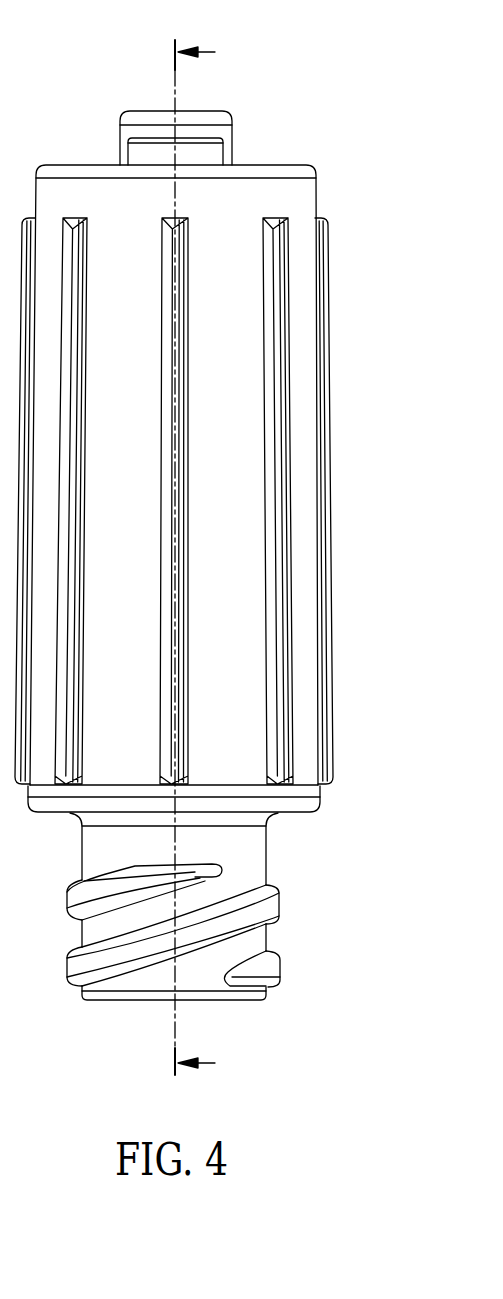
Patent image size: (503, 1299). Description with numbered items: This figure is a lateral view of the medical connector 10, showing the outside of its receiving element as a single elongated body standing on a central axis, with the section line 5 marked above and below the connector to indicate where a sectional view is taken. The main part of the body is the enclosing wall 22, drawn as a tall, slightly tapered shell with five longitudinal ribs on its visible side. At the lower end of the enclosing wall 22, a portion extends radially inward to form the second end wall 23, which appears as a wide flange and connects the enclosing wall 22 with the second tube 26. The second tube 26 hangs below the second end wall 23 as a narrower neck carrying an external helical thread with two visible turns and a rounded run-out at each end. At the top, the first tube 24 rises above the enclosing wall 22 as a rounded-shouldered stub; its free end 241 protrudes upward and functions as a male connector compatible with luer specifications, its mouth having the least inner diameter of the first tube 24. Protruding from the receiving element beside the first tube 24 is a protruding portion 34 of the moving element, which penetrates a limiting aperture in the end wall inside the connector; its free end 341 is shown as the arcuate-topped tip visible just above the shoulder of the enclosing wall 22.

The medical connector 10 is at (385, 137).
The section line 5- 5 is at (195, 557).
The enclosing wall 22 is at (302, 432).
The second end wall 23 is at (293, 805).
The first tube 24 is at (223, 134).
The free end of first tube 241 is at (207, 118).
The second tube 26 is at (238, 880).
The protruding portion 34 is at (147, 157).
The free end of protruding portion 341 is at (143, 137).